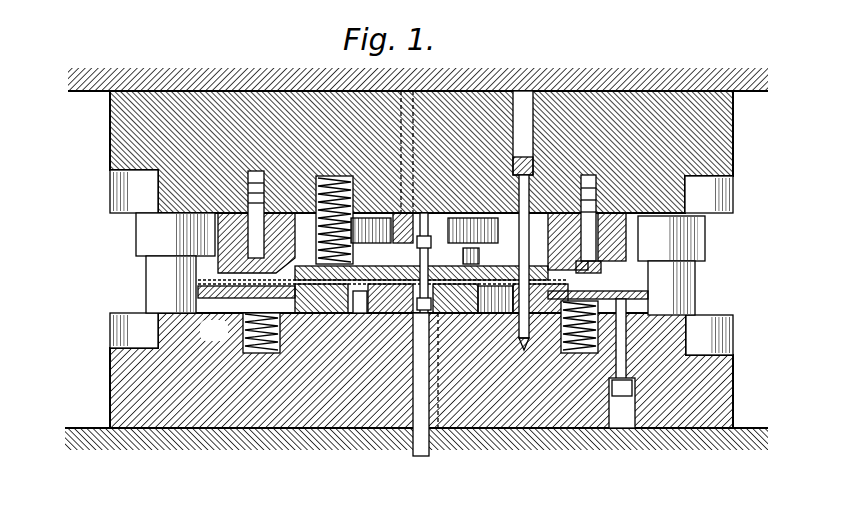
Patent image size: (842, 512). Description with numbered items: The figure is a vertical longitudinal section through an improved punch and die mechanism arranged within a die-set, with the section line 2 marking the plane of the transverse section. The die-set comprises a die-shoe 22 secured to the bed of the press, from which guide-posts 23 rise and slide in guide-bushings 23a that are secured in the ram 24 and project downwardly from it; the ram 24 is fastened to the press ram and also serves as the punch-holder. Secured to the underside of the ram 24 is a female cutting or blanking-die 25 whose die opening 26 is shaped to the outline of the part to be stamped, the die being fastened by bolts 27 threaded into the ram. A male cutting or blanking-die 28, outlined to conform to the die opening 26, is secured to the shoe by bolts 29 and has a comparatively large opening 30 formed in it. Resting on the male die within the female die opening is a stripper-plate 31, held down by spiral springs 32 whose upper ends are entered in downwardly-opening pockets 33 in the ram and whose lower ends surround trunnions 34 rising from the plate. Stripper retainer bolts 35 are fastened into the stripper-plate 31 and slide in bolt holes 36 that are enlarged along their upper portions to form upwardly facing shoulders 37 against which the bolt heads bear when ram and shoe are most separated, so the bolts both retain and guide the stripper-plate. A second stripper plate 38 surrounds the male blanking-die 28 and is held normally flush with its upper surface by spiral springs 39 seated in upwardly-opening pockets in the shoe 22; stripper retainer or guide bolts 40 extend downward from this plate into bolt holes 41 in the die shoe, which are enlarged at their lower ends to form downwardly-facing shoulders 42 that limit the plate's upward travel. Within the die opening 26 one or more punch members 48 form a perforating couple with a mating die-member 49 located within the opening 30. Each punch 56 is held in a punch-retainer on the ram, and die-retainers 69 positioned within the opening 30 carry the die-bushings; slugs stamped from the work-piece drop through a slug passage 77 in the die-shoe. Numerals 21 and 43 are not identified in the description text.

The section line 2— 2 is at (419, 270).
The die set 21 is at (727, 147).
The die-shoe 22 is at (128, 362).
The guide-posts 23 is at (150, 288).
The guide-bushings 23a is at (148, 217).
The ram 24 is at (118, 116).
The female cutting or blanking-die 25 is at (223, 202).
The die opening 26 is at (296, 203).
The bolts 27 is at (210, 232).
The male cutting or blanking-die 28 is at (482, 316).
The bolts 29 is at (306, 320).
The opening 30 is at (352, 305).
The stripper-plate 31 is at (524, 262).
The spiral springs 32 is at (305, 240).
The pockets 33 is at (344, 172).
The trunnions 34 is at (301, 263).
The stripper retainer bolts 35 is at (505, 178).
The bolt holes 36 is at (519, 98).
The shoulders 37 is at (528, 176).
The second stripper plate 38 is at (630, 289).
The spiral springs 39 is at (251, 345).
The stripper retainer or guide bolts 40 is at (610, 355).
The bolt holes 41 is at (612, 395).
The shoulders 42 is at (622, 366).
The gauge pin 43 is at (411, 263).
The punch members 48 is at (470, 218).
The mating die-member 49 is at (396, 306).
The punch 56 is at (455, 247).
The die-retainers 69 is at (472, 292).
The slug passage 77 is at (438, 400).